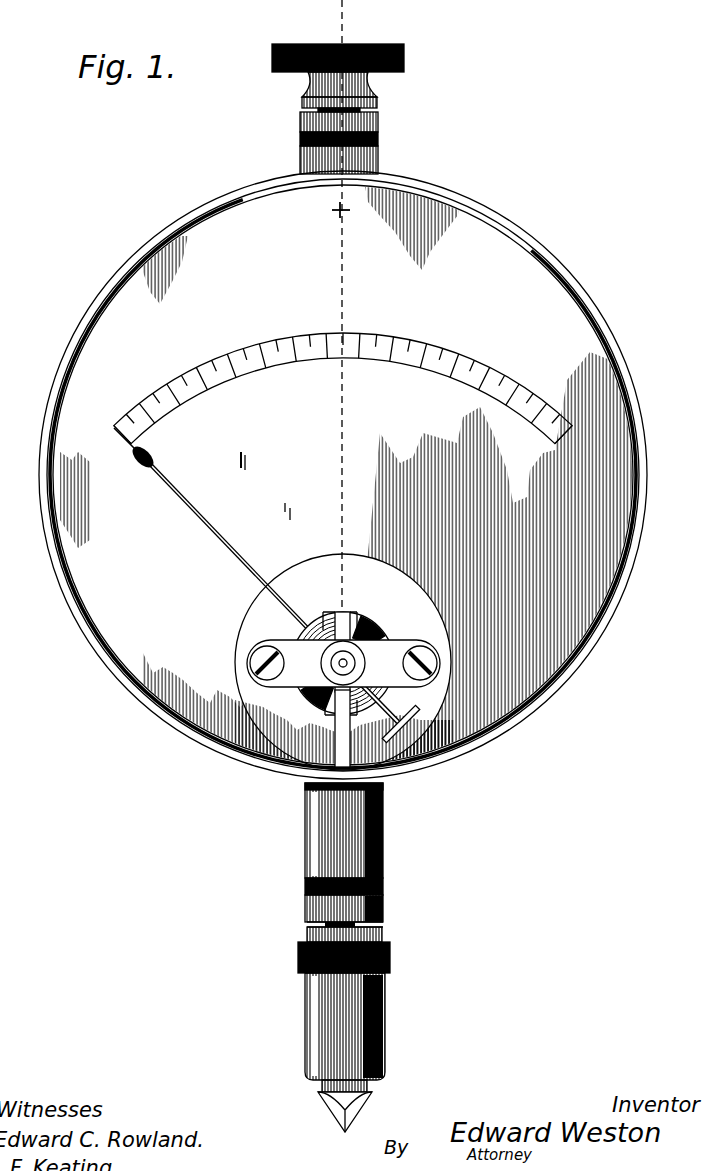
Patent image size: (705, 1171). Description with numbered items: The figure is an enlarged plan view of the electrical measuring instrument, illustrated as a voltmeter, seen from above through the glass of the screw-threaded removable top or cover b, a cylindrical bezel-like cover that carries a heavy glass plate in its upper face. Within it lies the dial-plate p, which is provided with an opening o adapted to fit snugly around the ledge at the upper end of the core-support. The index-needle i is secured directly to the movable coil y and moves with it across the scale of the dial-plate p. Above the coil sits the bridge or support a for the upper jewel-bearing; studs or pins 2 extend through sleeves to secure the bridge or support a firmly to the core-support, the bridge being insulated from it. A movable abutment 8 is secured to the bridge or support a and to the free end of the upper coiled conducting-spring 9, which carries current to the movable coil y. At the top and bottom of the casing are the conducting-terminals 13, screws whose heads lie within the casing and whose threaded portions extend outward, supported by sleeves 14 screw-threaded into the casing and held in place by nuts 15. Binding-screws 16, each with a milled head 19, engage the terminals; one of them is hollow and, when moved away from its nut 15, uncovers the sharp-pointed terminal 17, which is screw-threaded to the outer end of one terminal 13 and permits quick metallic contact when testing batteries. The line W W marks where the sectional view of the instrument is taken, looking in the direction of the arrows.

The milled head 19 is at (404, 58).
The binding-screw 16 is at (372, 88).
The nut 15 is at (380, 122).
The sleeve 14 is at (380, 156).
The conducting-terminal 13 is at (325, 923).
The sharp-pointed terminal 17 is at (360, 1116).
The section line W W is at (388, 14).
The screw-threaded removable top or cover b is at (637, 557).
The dial-plate p is at (322, 312).
The index-needle i is at (228, 546).
The opening o is at (343, 647).
The upper coiled conducting-spring 9 is at (323, 626).
The movable abutment 8 is at (347, 728).
The stud or pin 2 is at (250, 656).
The movable coil y is at (378, 630).
The bridge or support a is at (353, 663).